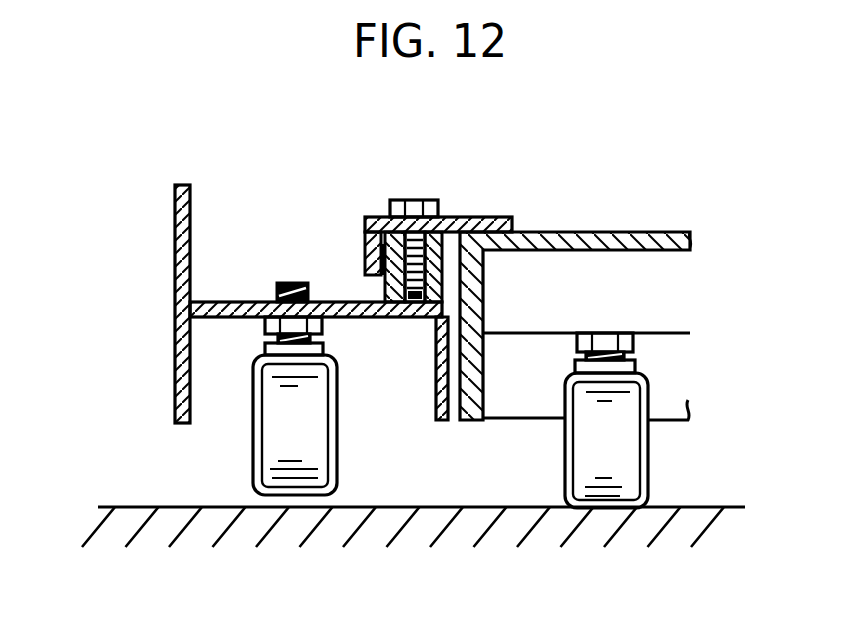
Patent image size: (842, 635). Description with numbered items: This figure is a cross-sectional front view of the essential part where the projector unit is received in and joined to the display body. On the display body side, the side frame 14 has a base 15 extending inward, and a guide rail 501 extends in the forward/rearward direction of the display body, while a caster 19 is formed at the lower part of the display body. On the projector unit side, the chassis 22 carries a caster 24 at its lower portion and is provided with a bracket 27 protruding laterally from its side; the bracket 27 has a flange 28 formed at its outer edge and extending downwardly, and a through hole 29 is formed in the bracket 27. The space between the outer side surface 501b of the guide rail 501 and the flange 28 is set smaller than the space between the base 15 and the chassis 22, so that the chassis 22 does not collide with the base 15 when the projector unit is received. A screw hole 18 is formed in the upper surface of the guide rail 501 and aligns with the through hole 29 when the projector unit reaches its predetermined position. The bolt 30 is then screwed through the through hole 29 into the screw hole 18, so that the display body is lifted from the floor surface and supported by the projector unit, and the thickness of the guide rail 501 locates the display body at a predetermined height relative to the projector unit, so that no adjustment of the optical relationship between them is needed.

The side frame 14 is at (183, 236).
The base 15 is at (220, 302).
The caster 19 is at (337, 450).
The caster 24 is at (648, 462).
The chassis 22 is at (590, 243).
The bracket 27 is at (494, 217).
The flange 28 is at (366, 262).
The through hole 29 is at (410, 201).
The bolt 30 is at (420, 200).
The screw hole 18 is at (426, 289).
The guide rail 501 is at (372, 248).
The outer side surface of guide rail 501b is at (392, 290).